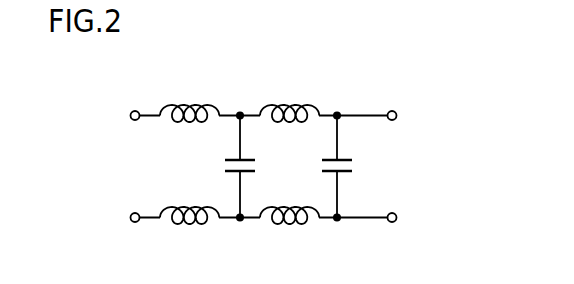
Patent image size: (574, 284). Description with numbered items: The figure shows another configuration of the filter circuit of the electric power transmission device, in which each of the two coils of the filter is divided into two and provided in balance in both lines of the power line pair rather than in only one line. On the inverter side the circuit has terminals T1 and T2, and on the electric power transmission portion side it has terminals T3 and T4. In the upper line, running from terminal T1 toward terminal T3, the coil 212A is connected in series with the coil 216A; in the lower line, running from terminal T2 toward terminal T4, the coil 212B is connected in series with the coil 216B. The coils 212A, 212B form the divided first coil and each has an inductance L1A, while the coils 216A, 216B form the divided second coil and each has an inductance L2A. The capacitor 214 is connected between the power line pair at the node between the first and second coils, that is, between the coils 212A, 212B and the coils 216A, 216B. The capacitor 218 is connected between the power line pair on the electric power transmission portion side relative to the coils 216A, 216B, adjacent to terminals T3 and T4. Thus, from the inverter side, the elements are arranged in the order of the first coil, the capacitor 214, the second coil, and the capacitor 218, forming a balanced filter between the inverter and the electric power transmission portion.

The coil 212A is at (188, 103).
The coil 212B is at (192, 223).
The capacitor 214 is at (235, 172).
The coil 216A is at (289, 103).
The coil 216B is at (292, 223).
The capacitor 218 is at (332, 172).
The terminal T1 is at (131, 122).
The terminal T2 is at (133, 209).
The terminal T3 is at (395, 122).
The terminal T4 is at (396, 210).